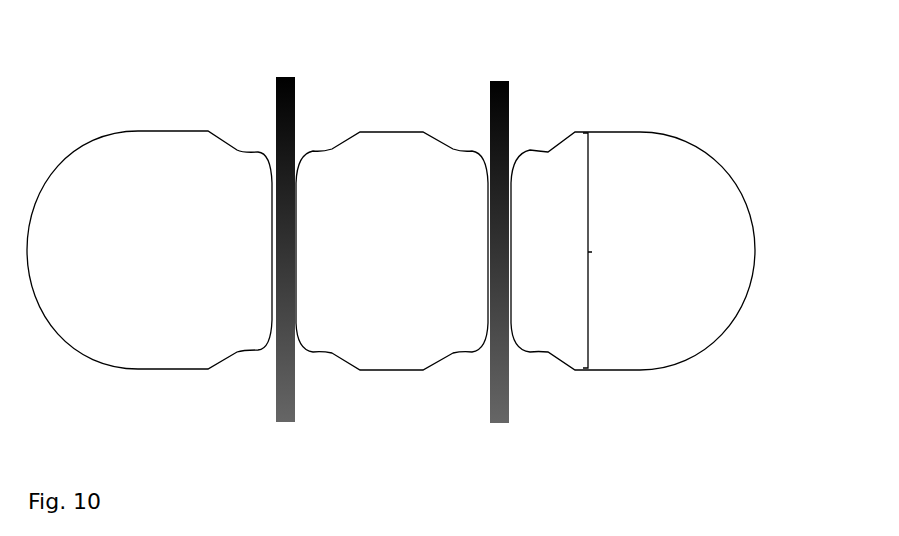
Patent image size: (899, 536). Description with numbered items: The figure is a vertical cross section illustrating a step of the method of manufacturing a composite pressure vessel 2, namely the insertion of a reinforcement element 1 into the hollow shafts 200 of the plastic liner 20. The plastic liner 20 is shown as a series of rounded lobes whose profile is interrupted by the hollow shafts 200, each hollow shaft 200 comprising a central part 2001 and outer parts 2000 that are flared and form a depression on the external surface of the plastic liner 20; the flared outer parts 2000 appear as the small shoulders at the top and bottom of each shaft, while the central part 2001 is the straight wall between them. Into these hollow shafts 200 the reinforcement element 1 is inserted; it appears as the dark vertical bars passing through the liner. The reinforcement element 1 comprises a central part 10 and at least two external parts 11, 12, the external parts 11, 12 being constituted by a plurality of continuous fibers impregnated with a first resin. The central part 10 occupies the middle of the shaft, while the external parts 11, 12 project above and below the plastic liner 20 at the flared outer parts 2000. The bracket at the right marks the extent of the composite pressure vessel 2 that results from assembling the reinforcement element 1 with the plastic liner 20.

The reinforcement element 1 is at (548, 85).
The central part 10 is at (497, 258).
The external part 11 is at (482, 99).
The external part 12 is at (513, 407).
The composite pressure vessel 2 is at (818, 135).
The plastic liner 20 is at (697, 132).
The hollow shaft 200 is at (611, 250).
The outer part 2000 is at (442, 155).
The central part 2001 is at (472, 265).